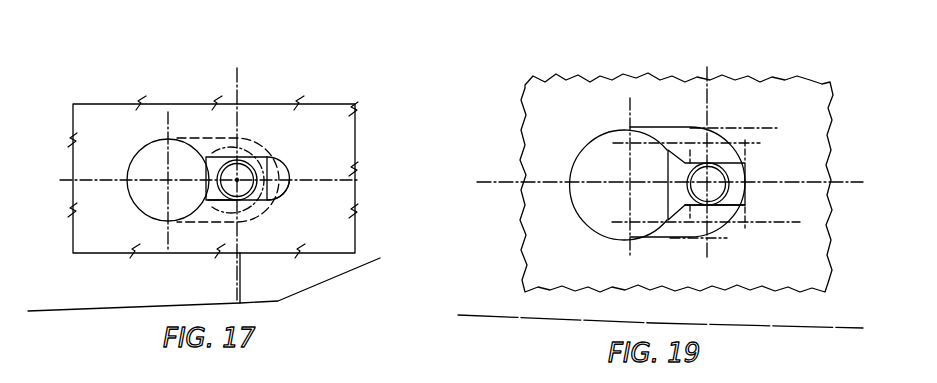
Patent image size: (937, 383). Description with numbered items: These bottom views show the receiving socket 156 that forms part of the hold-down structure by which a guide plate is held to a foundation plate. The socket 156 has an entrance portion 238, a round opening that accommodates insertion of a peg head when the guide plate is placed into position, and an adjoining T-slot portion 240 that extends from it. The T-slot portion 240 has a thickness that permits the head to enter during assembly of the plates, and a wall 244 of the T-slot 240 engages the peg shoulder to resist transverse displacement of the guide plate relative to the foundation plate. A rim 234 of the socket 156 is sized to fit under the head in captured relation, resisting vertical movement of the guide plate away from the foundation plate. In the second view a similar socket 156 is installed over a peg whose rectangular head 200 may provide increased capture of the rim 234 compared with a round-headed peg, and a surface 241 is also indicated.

In FIG. 17, the socket 156 is at (200, 138).
In FIG. 19, the socket 156 is at (678, 127).
In FIG. 17, the entrance portion 238 is at (138, 208).
In FIG. 19, the entrance portion 238 is at (582, 152).
In FIG. 17, the rim 234 is at (250, 152).
In FIG. 19, the rim 234 is at (733, 213).
In FIG. 17, the wall 244 is at (233, 200).
In FIG. 17, the T-slot portion 240 is at (258, 200).
In FIG. 19, the rectangular head 200 is at (733, 180).
In FIG. 19, the slot surface 241 is at (725, 205).